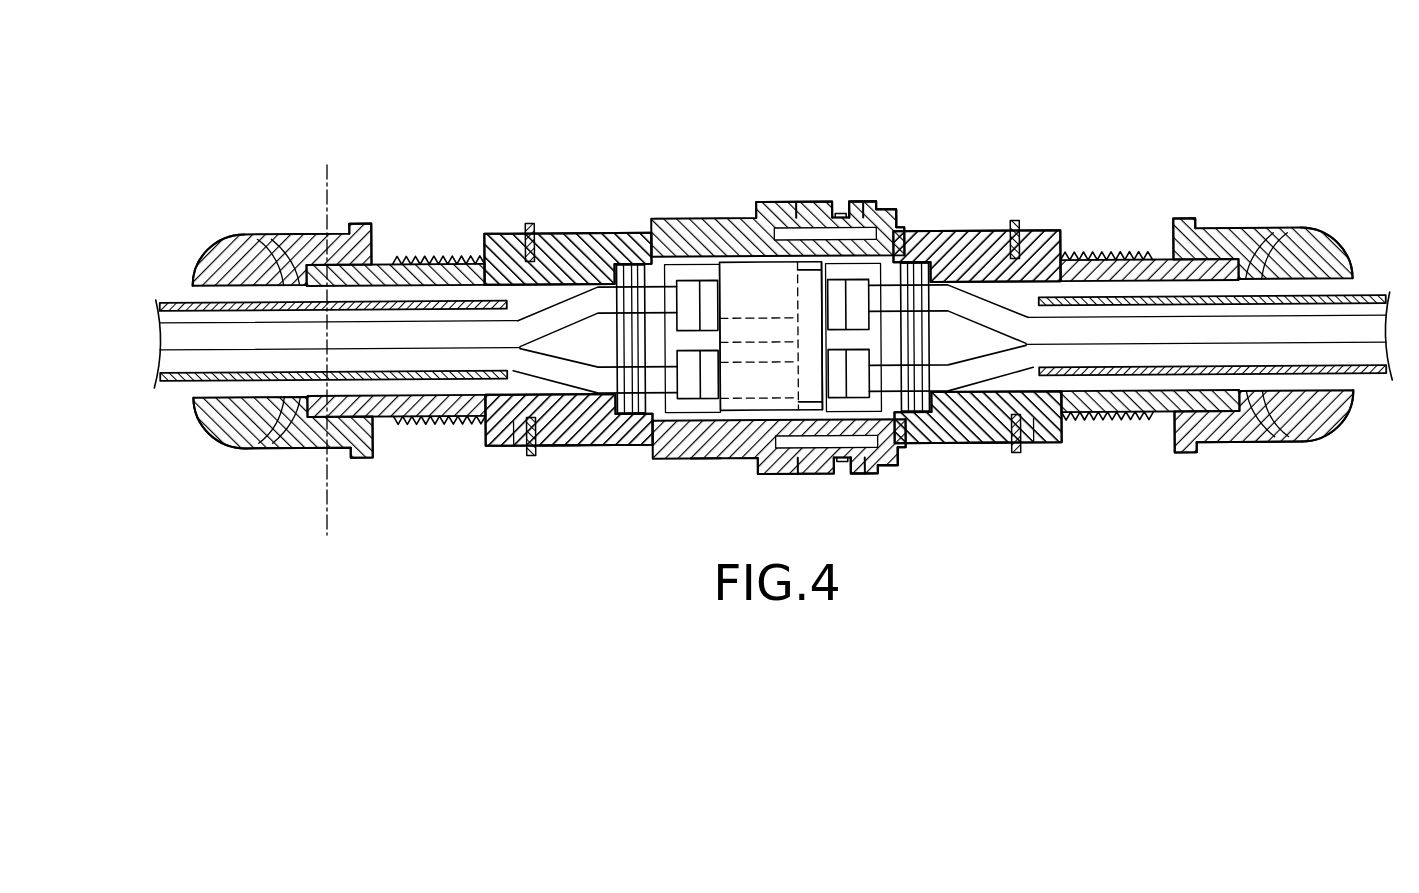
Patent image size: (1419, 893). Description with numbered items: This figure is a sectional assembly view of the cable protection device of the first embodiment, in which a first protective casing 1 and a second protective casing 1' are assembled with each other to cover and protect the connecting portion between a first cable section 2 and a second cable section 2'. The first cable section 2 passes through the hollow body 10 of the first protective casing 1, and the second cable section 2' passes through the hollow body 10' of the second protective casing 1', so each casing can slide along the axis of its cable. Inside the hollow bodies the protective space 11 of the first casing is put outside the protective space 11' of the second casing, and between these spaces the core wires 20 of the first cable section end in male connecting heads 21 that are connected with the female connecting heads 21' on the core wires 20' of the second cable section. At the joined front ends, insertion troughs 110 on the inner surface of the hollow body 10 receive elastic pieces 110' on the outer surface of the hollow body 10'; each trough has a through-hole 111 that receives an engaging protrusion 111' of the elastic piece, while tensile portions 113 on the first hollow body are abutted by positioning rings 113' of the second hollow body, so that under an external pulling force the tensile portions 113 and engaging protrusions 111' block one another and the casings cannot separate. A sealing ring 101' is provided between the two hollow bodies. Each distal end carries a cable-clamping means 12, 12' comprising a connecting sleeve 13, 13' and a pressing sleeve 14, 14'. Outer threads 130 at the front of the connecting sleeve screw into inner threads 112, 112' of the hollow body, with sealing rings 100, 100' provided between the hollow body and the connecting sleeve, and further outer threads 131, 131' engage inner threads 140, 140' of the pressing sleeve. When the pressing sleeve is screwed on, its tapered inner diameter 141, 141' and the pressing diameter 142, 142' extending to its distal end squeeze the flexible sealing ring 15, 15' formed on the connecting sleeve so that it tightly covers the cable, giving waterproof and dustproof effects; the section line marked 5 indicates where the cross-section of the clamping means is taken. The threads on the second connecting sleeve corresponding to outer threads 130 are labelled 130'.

The first protective casing 1 is at (568, 272).
The second protective casing 1' is at (983, 269).
The first cable section 2 is at (408, 299).
The second cable section 2' is at (1136, 292).
The section line 5 is at (333, 526).
The hollow body 10 is at (778, 304).
The hollow body 10' is at (911, 307).
The protective space 11 is at (568, 379).
The protective space 11' is at (948, 380).
The cable-clamping means 12 is at (333, 295).
The cable-clamping means 12' is at (1215, 290).
The connecting sleeve 13 is at (396, 260).
The connecting sleeve 13' is at (1150, 254).
The pressing sleeve 14 is at (282, 281).
The pressing sleeve 14' is at (1263, 274).
The flexible sealing ring 15 is at (298, 488).
The flexible sealing ring 15' is at (1249, 482).
The core wires 20 is at (677, 387).
The core wires 20' is at (876, 385).
The connecting head 21 is at (765, 397).
The connecting head 21' is at (800, 399).
The sealing ring 100 is at (506, 297).
The sealing ring 100' is at (1041, 293).
The sealing ring 101' is at (692, 497).
The insertion trough 110 is at (771, 300).
The elastic piece 110' is at (809, 292).
The through-hole 111 is at (845, 277).
The engaging protrusion 111' is at (874, 290).
The inner threads 112 is at (558, 487).
The inner threads 112' is at (994, 485).
The tensile portion 113 is at (891, 302).
The positioning ring 113' is at (917, 292).
The outer threads 130 is at (569, 380).
The groove 130' is at (980, 377).
The outer threads 131 is at (438, 392).
The outer threads 131' is at (1106, 387).
The inner threads 140 is at (383, 372).
The inner threads 140' is at (1165, 366).
The tapered inner diameter 141 is at (266, 312).
The tapered inner diameter 141' is at (1278, 306).
The pressing diameter 142 is at (213, 363).
The pressing diameter 142' is at (1336, 356).